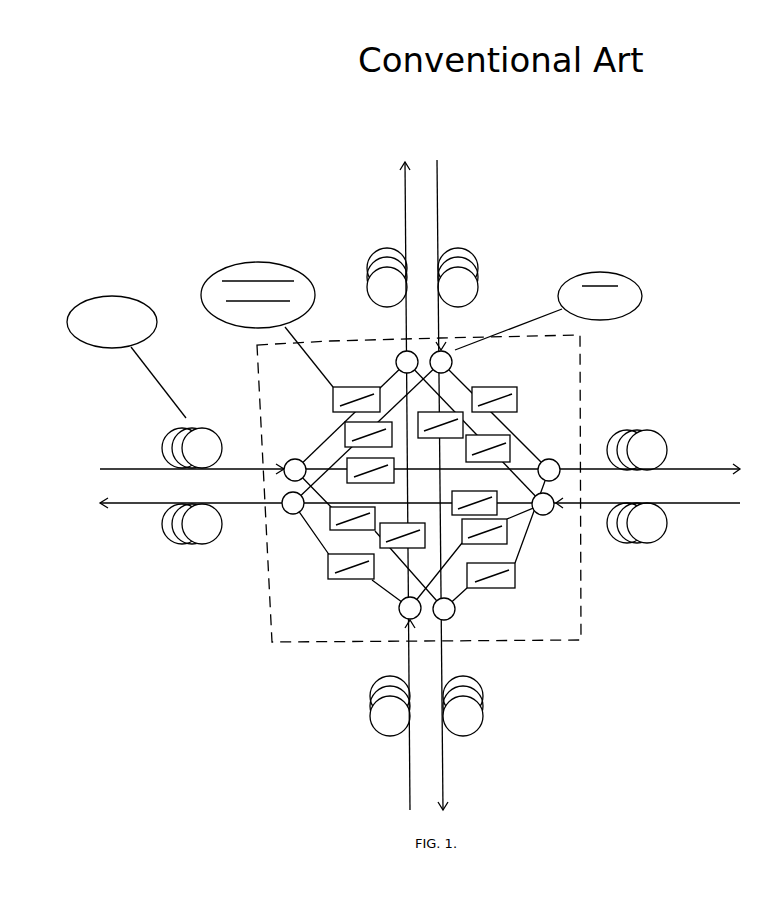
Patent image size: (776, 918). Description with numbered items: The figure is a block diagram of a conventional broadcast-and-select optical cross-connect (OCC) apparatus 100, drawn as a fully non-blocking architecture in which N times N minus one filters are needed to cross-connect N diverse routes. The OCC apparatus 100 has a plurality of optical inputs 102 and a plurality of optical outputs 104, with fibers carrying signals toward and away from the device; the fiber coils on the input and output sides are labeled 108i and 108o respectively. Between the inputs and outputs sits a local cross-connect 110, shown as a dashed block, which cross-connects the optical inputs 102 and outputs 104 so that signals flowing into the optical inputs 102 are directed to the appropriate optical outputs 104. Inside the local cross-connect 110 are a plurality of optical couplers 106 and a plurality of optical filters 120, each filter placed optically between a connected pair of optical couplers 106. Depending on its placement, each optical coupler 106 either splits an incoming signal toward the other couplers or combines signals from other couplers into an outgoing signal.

The OCC apparatus 100 is at (253, 135).
The optical inputs 102 is at (438, 200).
The optical outputs 104 is at (403, 210).
The optical couplers 106 is at (641, 297).
The input fiber coil 108i is at (478, 268).
The output fiber coil 108o is at (647, 430).
The local cross-connect 110 is at (565, 637).
The optical filters 120 is at (583, 383).